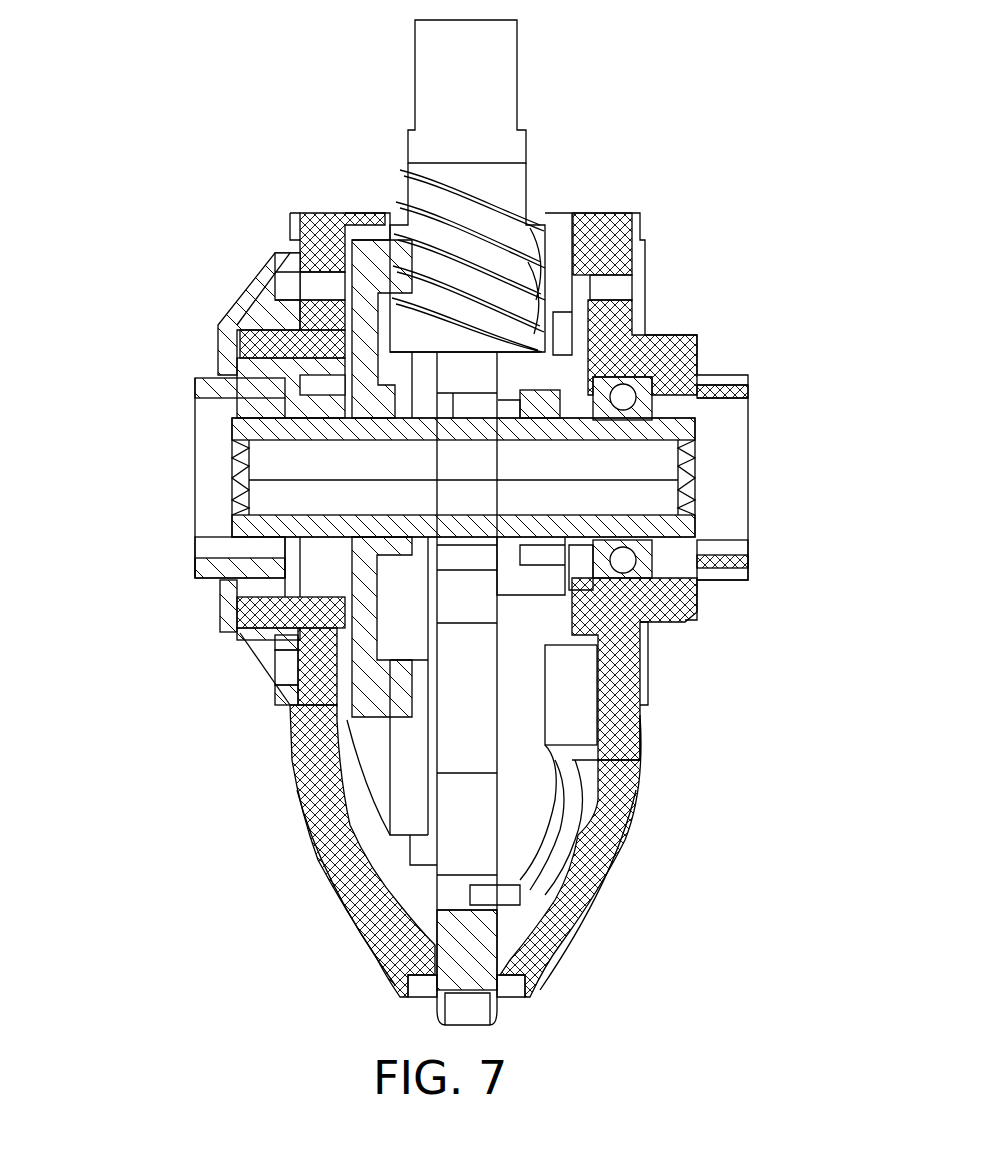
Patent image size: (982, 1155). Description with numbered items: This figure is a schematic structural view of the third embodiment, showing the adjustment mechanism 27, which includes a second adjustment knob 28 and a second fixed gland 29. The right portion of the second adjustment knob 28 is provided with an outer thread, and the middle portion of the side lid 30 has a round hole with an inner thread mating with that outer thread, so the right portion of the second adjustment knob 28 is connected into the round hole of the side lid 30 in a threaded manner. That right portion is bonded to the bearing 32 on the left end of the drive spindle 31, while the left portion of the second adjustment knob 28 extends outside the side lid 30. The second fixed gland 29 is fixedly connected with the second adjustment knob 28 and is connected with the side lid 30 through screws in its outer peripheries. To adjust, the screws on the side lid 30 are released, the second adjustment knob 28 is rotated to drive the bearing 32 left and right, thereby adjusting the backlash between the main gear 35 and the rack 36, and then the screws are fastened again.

The adjustment mechanism 27 is at (222, 340).
The second adjustment knob 28 is at (217, 573).
The second fixed gland 29 is at (275, 635).
The side lid 30 is at (290, 753).
The drive spindle 31 is at (640, 462).
The bearing 32 is at (322, 414).
The main gear 35 is at (365, 215).
The rack 36 is at (480, 133).